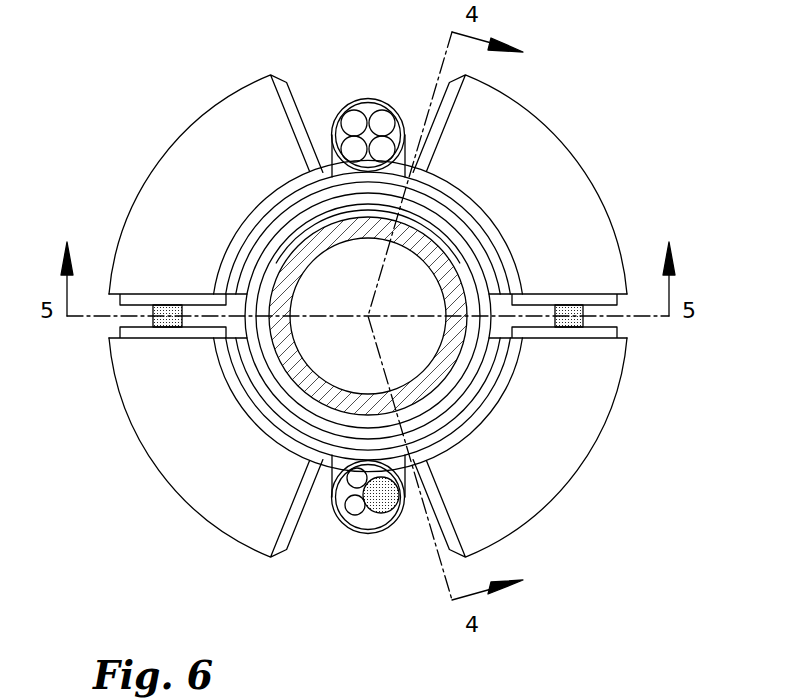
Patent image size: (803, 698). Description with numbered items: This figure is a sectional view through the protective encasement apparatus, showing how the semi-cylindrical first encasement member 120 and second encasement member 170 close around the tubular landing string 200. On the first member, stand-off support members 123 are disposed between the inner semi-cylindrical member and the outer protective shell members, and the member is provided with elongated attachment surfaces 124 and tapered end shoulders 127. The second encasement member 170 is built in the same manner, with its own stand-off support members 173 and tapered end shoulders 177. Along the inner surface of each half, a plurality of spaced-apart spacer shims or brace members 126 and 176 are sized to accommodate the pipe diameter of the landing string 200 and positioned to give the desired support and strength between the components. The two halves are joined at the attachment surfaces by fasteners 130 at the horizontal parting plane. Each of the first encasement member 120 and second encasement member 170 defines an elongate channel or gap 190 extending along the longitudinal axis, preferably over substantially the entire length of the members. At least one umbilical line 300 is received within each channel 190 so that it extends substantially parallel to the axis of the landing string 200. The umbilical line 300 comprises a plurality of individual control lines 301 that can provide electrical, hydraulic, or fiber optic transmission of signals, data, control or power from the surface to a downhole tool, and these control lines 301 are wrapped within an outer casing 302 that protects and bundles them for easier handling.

The first encasement member 120 is at (341, 180).
The stand-off support members 123 is at (287, 117).
The elongated attachment surfaces 124 is at (597, 300).
The spacer shims or brace members 126 is at (263, 250).
The tapered end shoulders 127 is at (160, 240).
The fastening bolt 130 is at (162, 325).
The second encasement member 170 is at (395, 449).
The stand-off support members 173 is at (283, 527).
The spacer shims or brace members 176 is at (257, 375).
The tapered end shoulders 177 is at (568, 395).
The elongate channel or gap 190 is at (325, 323).
The landing string 200 is at (450, 267).
The umbilical line 300 is at (342, 112).
The control lines 301 is at (354, 122).
The outer casing 302 is at (386, 124).